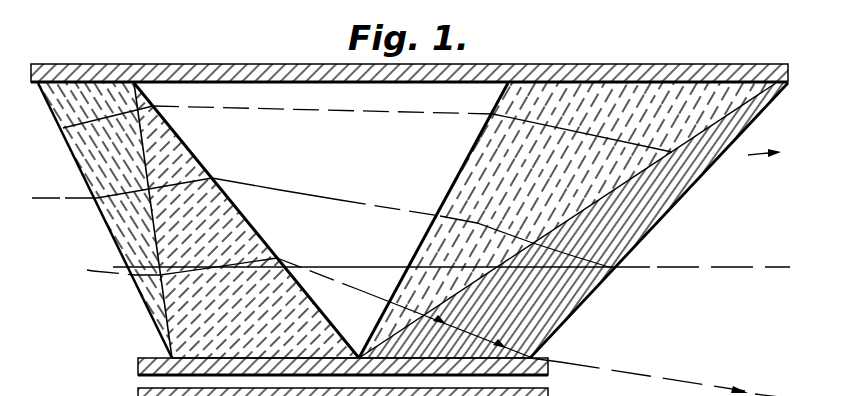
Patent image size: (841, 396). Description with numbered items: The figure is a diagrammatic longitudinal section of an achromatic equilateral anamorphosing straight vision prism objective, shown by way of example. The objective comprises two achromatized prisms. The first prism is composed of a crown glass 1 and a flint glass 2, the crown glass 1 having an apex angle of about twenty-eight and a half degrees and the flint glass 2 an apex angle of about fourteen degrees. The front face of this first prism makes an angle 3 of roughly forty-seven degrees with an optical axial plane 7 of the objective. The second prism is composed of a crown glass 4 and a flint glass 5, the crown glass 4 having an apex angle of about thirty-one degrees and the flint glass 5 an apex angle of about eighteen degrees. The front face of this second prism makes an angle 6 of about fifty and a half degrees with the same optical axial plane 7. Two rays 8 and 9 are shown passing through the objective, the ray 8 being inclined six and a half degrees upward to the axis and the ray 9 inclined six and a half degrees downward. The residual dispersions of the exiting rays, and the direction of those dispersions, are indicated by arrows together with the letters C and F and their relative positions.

The crown glass 1 is at (567, 220).
The flint glass 2 is at (573, 220).
The angle 3 is at (656, 231).
The crown glass 4 is at (246, 220).
The flint glass 5 is at (105, 220).
The angle 6 is at (349, 272).
The optical axial plane 7 is at (769, 267).
The ray 8 is at (63, 128).
The ray 9 is at (87, 270).